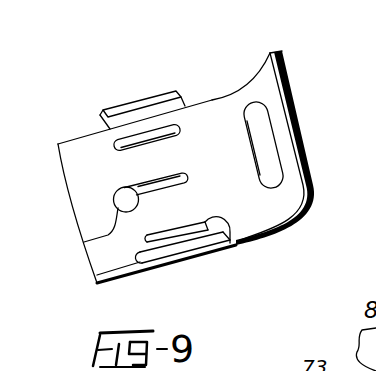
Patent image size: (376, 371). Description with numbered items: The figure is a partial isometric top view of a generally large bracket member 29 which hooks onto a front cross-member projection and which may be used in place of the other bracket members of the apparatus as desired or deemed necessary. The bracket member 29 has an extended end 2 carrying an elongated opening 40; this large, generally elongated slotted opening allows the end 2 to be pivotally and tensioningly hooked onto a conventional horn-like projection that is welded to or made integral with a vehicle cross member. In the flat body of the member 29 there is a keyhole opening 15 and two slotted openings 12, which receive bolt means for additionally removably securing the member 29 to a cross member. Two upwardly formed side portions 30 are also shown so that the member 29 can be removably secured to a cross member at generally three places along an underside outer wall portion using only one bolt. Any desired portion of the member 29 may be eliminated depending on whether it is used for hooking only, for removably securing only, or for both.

The extended end 2 is at (192, 166).
The slotted opening 12 is at (116, 151).
The keyhole opening 15 is at (84, 243).
The large bracket member 29 is at (205, 113).
The upwardly formed side portion 30 is at (114, 110).
The elongated opening 40 is at (268, 137).